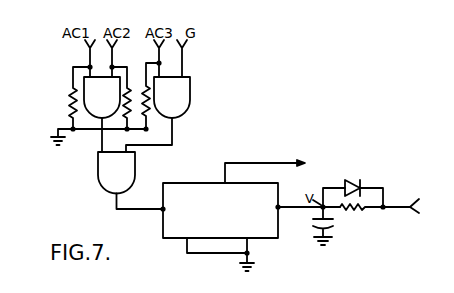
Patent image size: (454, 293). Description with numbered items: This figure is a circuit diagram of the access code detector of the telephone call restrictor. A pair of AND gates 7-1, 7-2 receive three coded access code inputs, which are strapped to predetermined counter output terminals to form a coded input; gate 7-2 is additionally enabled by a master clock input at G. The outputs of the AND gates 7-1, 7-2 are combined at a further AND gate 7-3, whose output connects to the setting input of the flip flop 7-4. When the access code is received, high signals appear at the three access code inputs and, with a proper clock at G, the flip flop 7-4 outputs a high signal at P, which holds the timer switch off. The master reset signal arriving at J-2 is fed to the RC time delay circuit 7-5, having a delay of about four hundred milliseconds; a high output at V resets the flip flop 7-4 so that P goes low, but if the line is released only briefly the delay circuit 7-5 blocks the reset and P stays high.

The AND gate 7-1 is at (97, 122).
The AND gate 7-2 is at (183, 99).
The AND gate 7-3 is at (135, 168).
The flip flop 7-4 is at (286, 179).
The RC time delay circuit 7-5 is at (338, 213).
The master reset signal output terminal J-2 is at (411, 214).